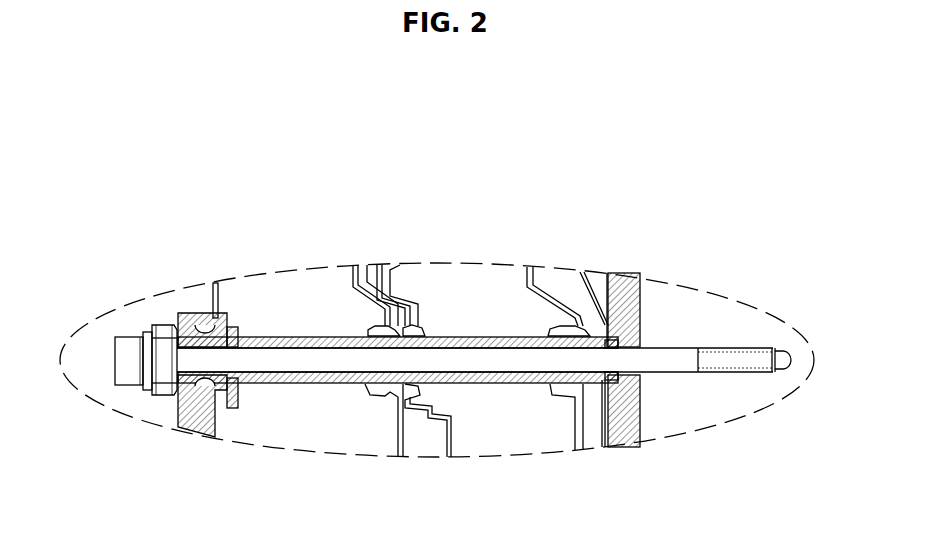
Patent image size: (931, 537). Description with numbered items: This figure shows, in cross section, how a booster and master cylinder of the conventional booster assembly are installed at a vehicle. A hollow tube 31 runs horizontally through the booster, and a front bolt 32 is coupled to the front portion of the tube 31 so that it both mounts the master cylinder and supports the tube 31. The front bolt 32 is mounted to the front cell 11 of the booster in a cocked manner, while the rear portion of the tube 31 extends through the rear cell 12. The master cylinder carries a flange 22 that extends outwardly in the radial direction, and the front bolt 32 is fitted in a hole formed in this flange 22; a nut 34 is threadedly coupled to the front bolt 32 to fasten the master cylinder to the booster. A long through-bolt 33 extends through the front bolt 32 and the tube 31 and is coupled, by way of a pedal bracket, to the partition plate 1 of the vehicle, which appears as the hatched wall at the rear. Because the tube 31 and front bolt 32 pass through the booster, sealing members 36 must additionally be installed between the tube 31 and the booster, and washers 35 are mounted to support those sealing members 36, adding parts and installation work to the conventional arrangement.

The partition plate 1 is at (640, 297).
The front cell 11 is at (215, 315).
The rear cell 12 is at (590, 276).
The flange 22 is at (187, 318).
The hollow tube 31 is at (297, 382).
The front bolt 32 is at (195, 428).
The through-bolt 33 is at (132, 343).
The nut 34 is at (163, 395).
The washer 35 is at (233, 328).
The sealing member 36 is at (242, 384).